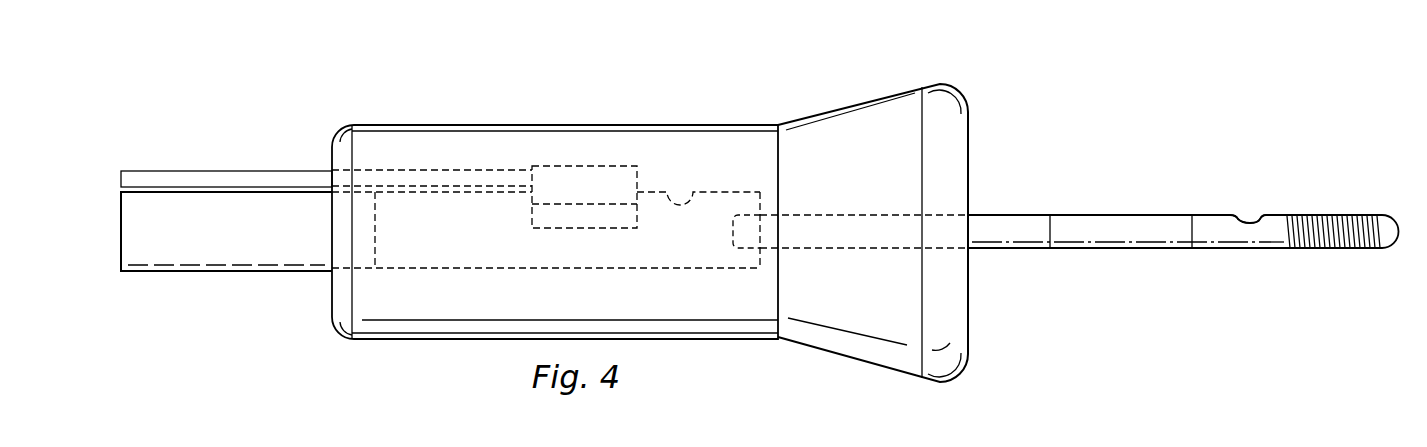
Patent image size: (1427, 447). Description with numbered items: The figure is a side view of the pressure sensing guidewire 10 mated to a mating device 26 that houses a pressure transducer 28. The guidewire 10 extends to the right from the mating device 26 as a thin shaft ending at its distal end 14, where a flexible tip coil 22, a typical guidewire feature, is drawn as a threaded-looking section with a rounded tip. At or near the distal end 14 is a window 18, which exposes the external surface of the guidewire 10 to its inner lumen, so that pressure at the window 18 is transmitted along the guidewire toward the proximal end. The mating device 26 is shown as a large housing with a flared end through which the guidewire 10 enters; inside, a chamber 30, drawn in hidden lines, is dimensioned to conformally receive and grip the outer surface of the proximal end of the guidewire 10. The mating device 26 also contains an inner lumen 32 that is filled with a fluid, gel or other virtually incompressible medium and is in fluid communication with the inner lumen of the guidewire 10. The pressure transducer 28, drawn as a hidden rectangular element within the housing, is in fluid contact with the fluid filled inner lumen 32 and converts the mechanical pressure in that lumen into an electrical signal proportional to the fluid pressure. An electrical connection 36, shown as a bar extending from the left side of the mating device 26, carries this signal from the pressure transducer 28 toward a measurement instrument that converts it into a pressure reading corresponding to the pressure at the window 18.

The pressure sensing guidewire 10 is at (1123, 175).
The distal end 14 is at (1391, 200).
The window 18 is at (1247, 213).
The flexible tip coil 22 is at (1334, 213).
The mating device 26 is at (489, 92).
The pressure transducer 28 is at (588, 185).
The chamber 30 is at (822, 215).
The inner lumen 32 is at (690, 198).
The electrical connection 36 is at (203, 170).